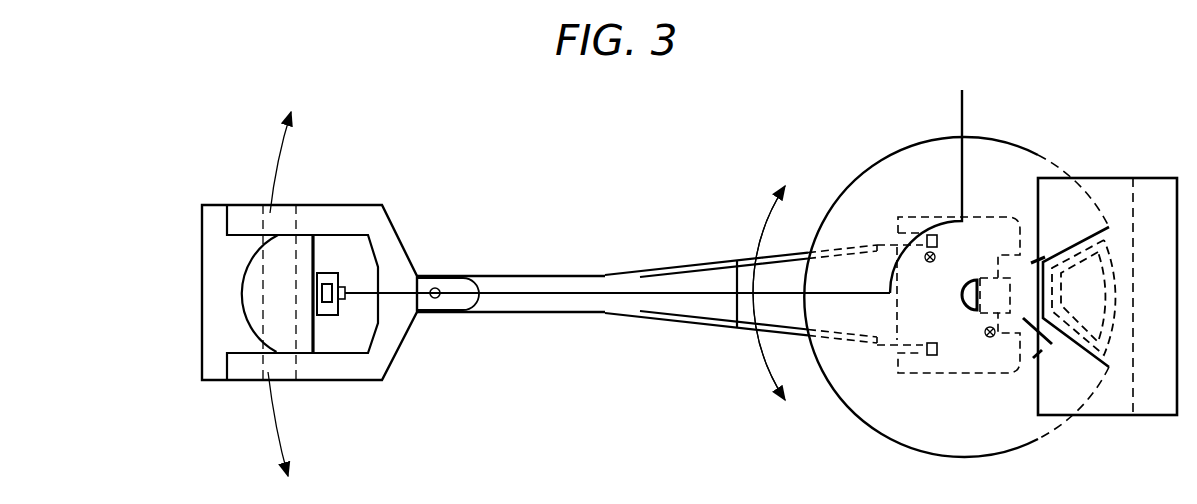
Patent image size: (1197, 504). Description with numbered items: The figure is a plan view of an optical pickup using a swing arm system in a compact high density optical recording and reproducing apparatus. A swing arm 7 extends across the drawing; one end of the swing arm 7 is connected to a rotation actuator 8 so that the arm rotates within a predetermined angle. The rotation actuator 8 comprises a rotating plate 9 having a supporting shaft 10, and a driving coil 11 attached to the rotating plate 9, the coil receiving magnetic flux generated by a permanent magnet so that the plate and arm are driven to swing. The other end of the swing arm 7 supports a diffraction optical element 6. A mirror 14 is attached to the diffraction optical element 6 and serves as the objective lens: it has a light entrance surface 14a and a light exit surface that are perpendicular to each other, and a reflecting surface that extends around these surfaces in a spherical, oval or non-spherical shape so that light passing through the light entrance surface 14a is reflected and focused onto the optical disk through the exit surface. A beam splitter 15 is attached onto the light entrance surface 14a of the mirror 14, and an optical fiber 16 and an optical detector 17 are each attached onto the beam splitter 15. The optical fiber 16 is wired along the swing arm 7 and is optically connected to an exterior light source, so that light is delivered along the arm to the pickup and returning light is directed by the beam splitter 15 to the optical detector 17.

The diffraction optical element 6 is at (180, 264).
The mirror 14 is at (237, 318).
The light entrance surface 14a is at (311, 248).
The beam splitter 15 is at (327, 317).
The optical detector 17 is at (335, 280).
The swing arm 7 is at (578, 313).
The optical fiber 16 is at (710, 290).
The rotation actuator 8 is at (1030, 142).
The rotating plate 9 is at (855, 408).
The supporting shaft 10 is at (967, 312).
The driving coil 11 is at (1094, 214).